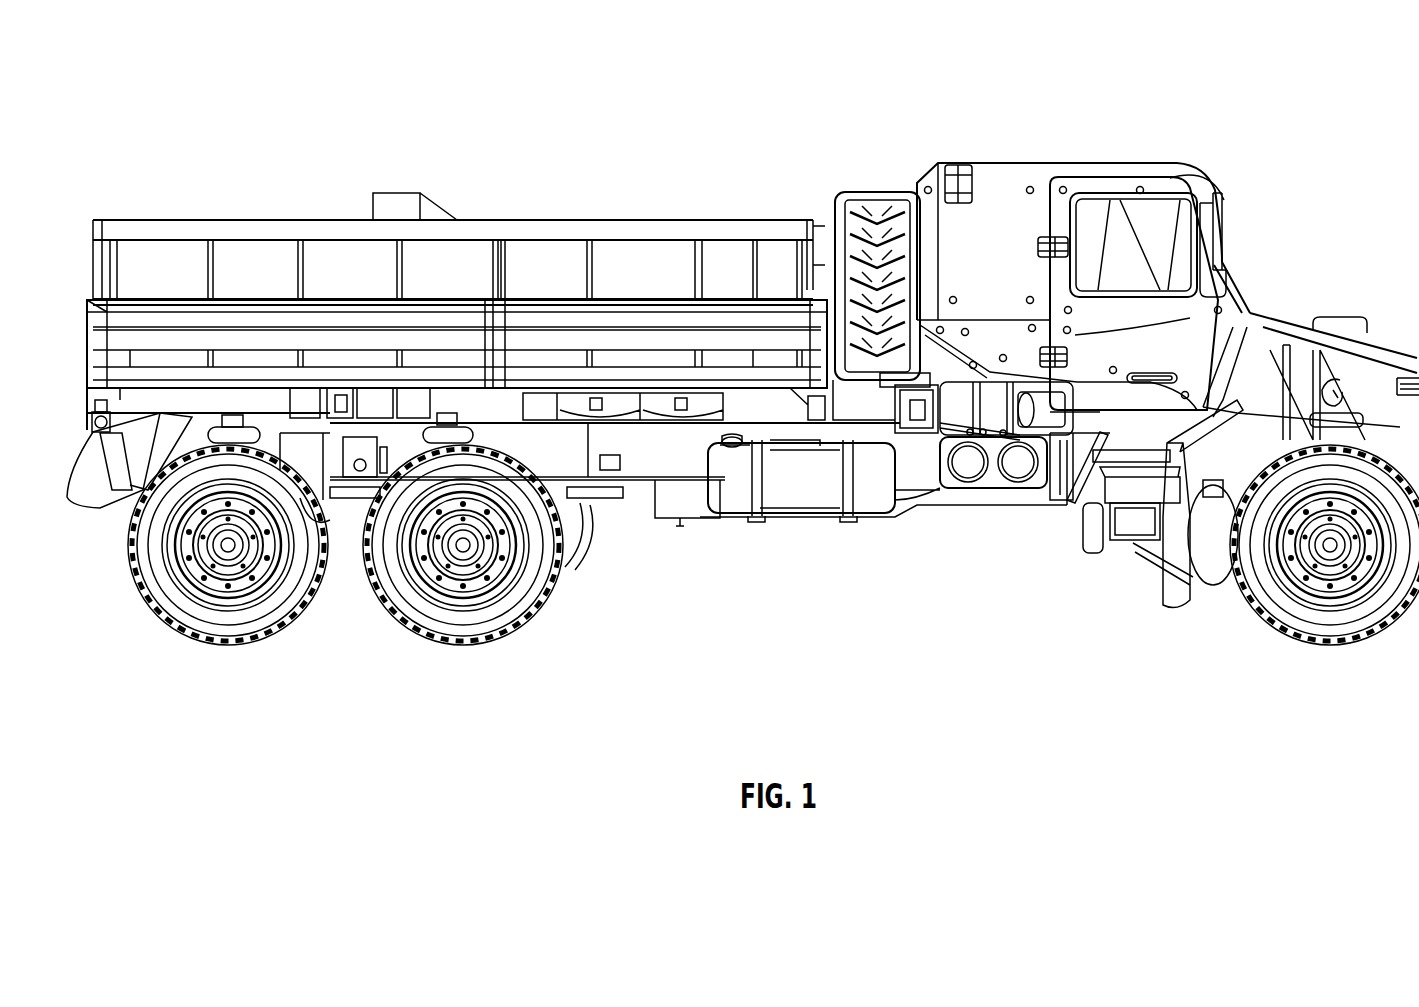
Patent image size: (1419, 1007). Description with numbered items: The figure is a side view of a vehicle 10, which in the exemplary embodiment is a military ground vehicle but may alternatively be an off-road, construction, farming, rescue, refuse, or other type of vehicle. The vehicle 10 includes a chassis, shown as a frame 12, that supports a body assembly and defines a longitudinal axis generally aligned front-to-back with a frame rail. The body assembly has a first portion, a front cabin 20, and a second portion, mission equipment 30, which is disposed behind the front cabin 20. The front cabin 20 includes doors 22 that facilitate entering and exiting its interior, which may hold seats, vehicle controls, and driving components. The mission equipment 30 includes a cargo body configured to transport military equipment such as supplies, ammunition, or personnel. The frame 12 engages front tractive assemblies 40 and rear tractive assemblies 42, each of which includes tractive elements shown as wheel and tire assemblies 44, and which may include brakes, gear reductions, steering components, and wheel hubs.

The vehicle 10 is at (158, 121).
The frame 12 is at (637, 462).
The front cabin 20 is at (1066, 143).
The doors 22 is at (1178, 333).
The mission equipment 30 is at (546, 190).
The front tractive assemblies 40 is at (1325, 660).
The rear tractive assemblies 42 is at (232, 662).
The wheel and tire assemblies 44 is at (195, 617).